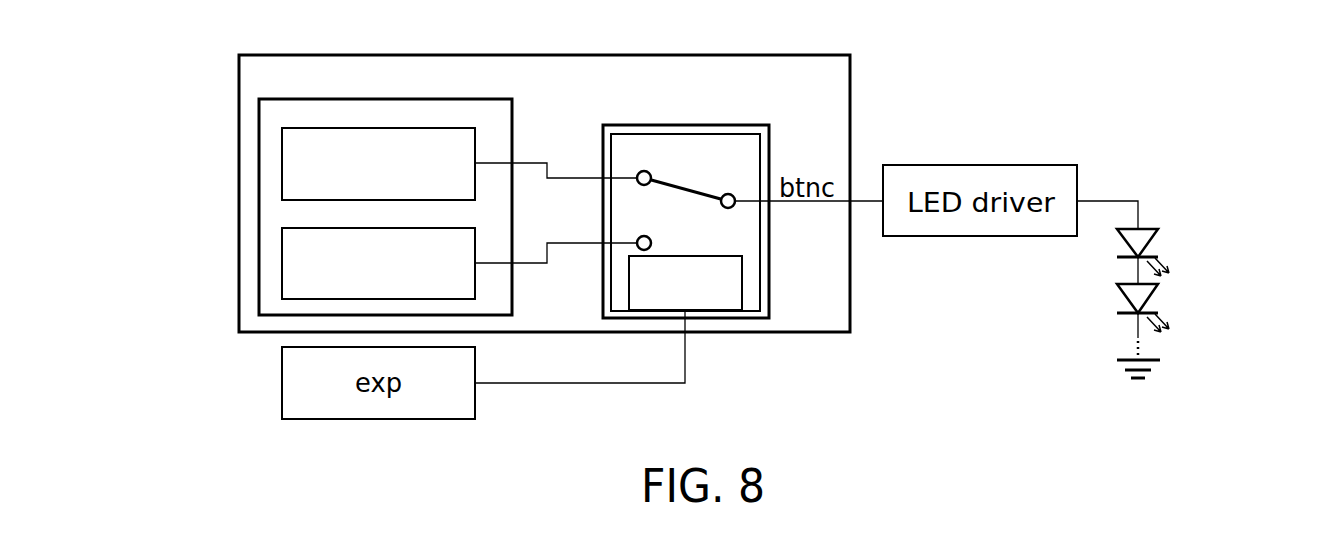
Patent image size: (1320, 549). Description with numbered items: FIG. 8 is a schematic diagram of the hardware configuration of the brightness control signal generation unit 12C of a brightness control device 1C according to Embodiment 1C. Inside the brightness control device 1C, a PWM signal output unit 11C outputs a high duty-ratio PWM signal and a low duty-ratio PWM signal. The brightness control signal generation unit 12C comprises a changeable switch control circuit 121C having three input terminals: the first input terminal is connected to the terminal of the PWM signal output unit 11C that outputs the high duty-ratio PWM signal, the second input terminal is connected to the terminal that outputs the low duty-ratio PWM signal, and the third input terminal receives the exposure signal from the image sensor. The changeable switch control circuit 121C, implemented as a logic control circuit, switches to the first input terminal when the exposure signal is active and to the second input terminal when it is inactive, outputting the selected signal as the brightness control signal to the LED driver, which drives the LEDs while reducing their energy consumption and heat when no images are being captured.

The brightness control device 1C is at (240, 57).
The PWM signal output unit 11C is at (260, 100).
The brightness control signal generation unit 12C is at (709, 203).
The changeable switch control circuit 121C is at (722, 134).